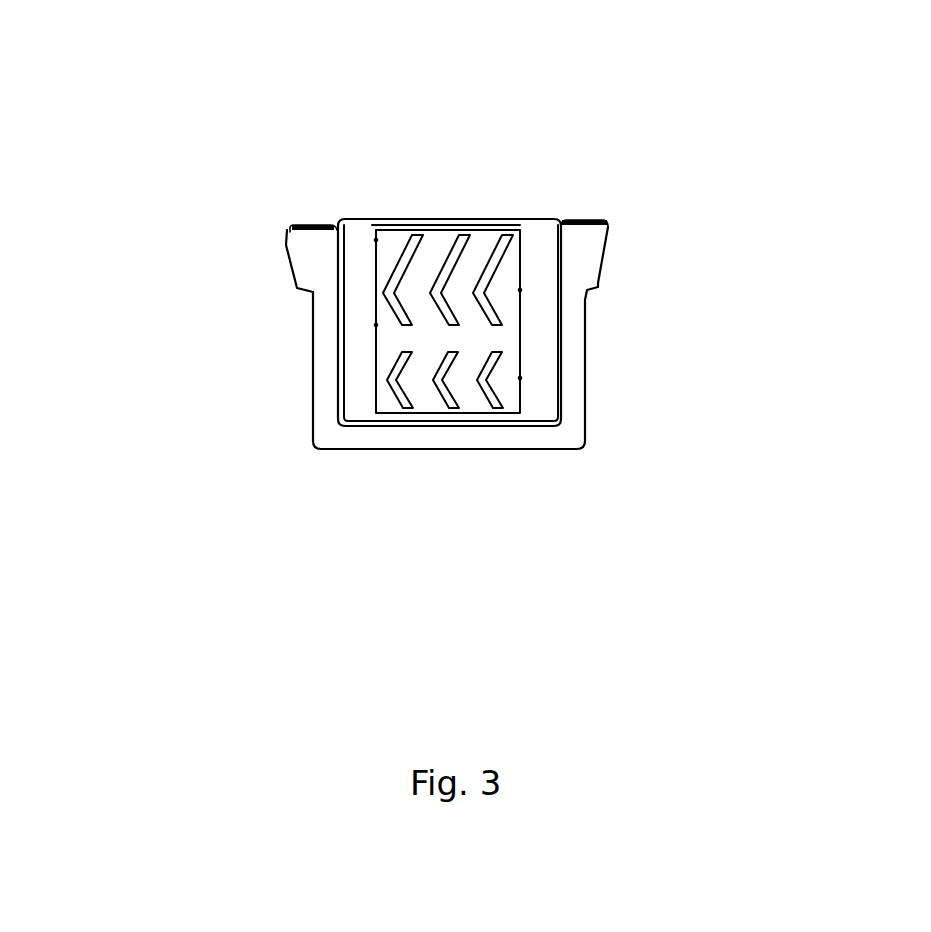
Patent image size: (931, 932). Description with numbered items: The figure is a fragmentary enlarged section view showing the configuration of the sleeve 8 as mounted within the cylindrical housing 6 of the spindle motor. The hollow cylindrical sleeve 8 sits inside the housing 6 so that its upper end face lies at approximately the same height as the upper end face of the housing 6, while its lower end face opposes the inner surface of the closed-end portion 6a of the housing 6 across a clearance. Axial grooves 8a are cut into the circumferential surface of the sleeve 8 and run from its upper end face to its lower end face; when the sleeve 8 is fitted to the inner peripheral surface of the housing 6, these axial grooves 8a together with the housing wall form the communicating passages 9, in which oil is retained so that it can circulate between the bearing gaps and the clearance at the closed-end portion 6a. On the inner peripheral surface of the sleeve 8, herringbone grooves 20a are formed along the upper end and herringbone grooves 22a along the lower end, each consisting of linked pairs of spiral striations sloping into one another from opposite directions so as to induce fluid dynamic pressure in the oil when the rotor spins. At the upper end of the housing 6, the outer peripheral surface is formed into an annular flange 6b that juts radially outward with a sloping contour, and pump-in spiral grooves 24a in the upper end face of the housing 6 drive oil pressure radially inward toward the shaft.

The housing 6 is at (568, 340).
The closed-end portion 6a is at (428, 437).
The annular flange 6b is at (592, 250).
The sleeve 8 is at (538, 360).
The axial grooves 8a is at (340, 265).
The communicating passages 9 is at (342, 360).
The herringbone grooves 20a is at (450, 250).
The herringbone grooves 22a is at (447, 392).
The pump-in spiral grooves 24a is at (590, 217).